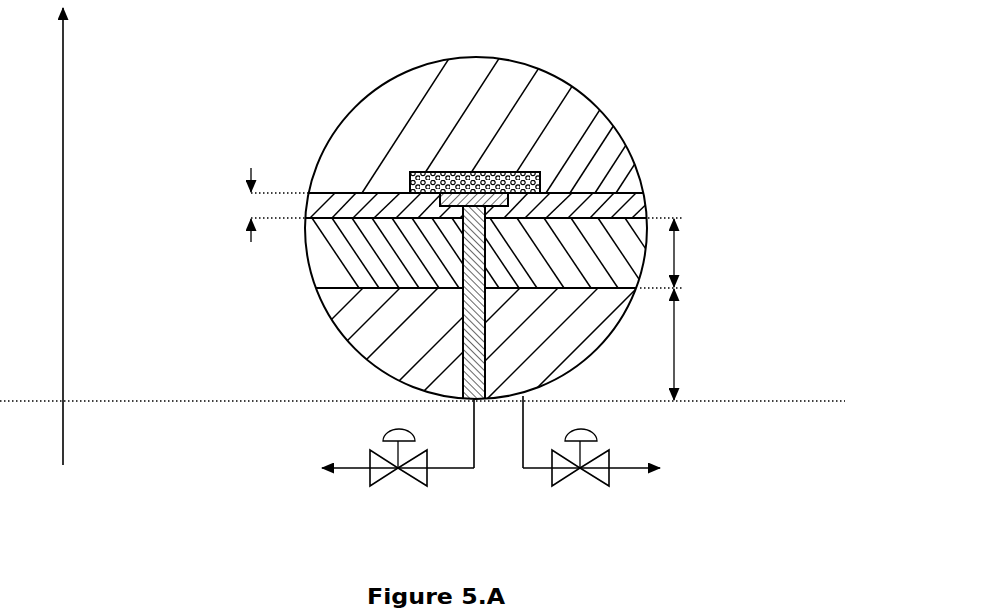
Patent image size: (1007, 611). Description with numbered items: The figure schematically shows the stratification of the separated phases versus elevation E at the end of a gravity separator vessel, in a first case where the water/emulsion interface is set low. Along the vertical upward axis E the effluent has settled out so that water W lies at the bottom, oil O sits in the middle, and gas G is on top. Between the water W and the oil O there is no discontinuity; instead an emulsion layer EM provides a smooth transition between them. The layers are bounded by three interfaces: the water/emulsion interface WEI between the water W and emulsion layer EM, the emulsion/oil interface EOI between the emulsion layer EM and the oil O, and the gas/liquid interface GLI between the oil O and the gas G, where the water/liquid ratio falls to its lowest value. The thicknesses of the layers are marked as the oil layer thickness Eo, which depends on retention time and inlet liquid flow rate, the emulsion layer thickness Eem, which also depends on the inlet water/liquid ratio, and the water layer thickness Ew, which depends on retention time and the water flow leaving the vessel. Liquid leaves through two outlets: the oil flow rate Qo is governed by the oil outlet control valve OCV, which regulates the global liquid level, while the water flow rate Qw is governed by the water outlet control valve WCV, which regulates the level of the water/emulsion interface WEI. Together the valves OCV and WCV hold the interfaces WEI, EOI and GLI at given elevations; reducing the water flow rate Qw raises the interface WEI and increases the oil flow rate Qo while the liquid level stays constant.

The elevation axis E is at (40, 236).
The gas G is at (352, 102).
The oil O is at (315, 188).
The emulsion layer EM is at (300, 252).
The water W is at (348, 345).
The gas/liquid interface GLI is at (621, 187).
The emulsion/oil interface EOI is at (622, 235).
The water/emulsion interface WEI is at (323, 296).
The oil layer thickness Eo is at (245, 205).
The emulsion layer thickness Eem is at (697, 253).
The water layer thickness Ew is at (710, 344).
The oil flow rate Qo is at (369, 441).
The water flow rate Qw is at (613, 440).
The oil outlet control valve OCV is at (398, 472).
The water outlet control valve WCV is at (578, 472).